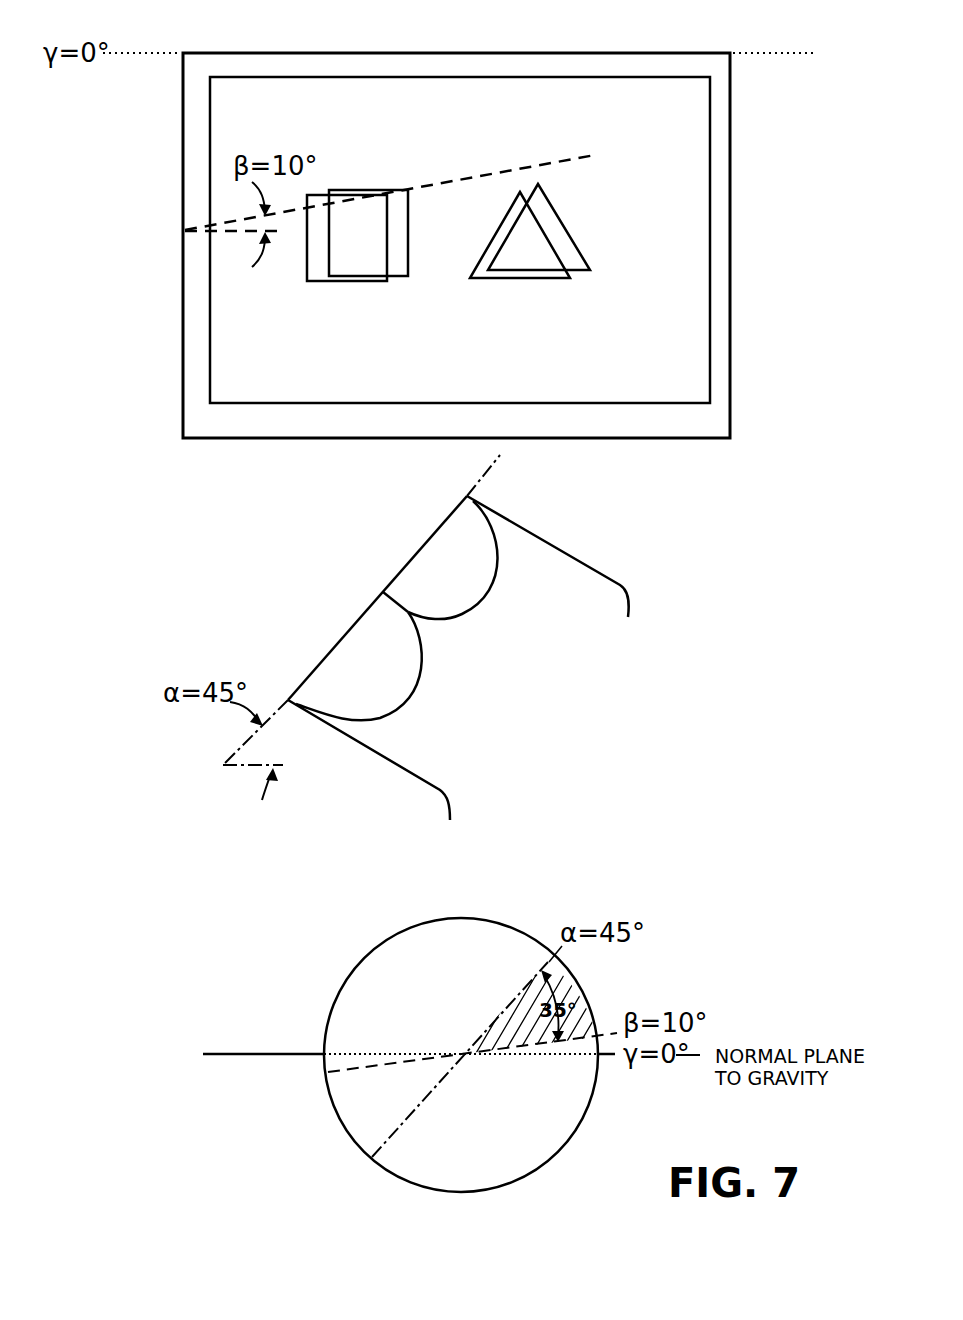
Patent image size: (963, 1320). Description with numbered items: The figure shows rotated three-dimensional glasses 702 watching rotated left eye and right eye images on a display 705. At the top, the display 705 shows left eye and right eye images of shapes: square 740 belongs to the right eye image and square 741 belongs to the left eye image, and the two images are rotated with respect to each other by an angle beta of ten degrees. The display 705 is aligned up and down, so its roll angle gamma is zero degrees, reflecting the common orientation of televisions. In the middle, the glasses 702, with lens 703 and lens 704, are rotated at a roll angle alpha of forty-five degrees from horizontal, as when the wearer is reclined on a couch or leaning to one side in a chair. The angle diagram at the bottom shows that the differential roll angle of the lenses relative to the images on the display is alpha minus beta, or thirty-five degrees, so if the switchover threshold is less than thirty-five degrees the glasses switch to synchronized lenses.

The 3D glasses 702 is at (507, 515).
The lens 703 is at (497, 577).
The lens 704 is at (418, 676).
The display 705 is at (730, 112).
The square 740 is at (388, 194).
The square 741 is at (408, 192).